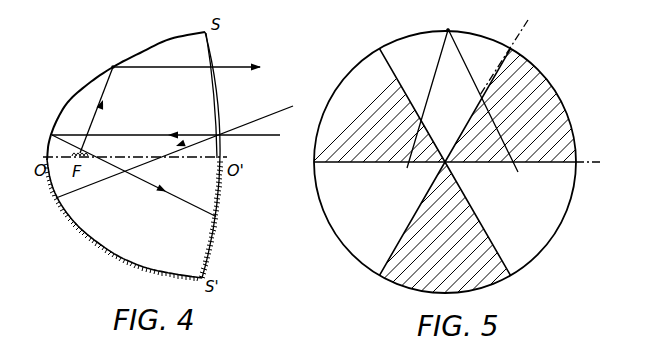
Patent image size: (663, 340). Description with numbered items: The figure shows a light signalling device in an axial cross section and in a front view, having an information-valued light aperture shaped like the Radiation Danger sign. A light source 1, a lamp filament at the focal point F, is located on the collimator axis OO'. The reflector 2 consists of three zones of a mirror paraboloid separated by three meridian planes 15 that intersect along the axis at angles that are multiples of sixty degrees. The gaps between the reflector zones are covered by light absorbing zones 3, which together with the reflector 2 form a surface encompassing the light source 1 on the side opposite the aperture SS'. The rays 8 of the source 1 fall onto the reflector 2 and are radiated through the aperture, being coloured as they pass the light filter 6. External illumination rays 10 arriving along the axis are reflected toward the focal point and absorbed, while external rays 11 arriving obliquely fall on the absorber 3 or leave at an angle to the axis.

In FIG. 4, the light source 1 is at (85, 142).
In FIG. 4, the reflector 2 is at (109, 57).
In FIG. 5, the reflector 2 is at (450, 53).
In FIG. 4, the absorber 3 is at (136, 156).
In FIG. 5, the absorber 3 is at (345, 97).
In FIG. 4, the light filter 6 is at (215, 56).
In FIG. 5, the light filter 6 is at (456, 20).
In FIG. 4, the light rays 8 is at (194, 72).
In FIG. 4, the external illumination rays 10 is at (170, 174).
In FIG. 4, the external illumination rays 11 is at (180, 142).
In FIG. 5, the meridian planes 15 is at (405, 84).